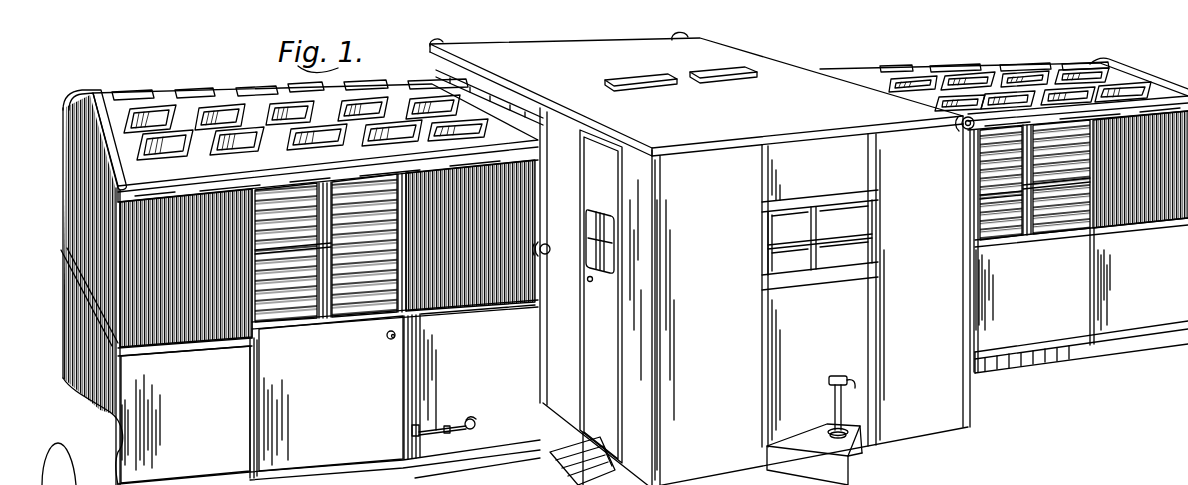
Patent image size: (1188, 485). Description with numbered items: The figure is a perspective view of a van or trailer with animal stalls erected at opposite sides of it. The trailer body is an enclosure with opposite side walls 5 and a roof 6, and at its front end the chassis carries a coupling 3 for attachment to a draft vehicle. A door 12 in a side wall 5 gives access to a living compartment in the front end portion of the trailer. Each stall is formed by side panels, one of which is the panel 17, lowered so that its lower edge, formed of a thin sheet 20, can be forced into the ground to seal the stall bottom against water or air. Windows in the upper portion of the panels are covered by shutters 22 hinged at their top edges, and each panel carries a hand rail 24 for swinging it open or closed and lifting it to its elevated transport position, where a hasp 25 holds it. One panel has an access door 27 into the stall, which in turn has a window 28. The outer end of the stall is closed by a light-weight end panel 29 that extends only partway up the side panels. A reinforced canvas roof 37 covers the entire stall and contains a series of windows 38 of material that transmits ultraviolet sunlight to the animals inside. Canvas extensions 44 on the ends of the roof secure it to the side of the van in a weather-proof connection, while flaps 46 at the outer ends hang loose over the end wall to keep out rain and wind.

The coupling 3 is at (849, 452).
The side wall 5 is at (574, 420).
The roof 6 is at (733, 54).
The door 12 is at (590, 364).
The panel 17 is at (1153, 323).
The thin sheet 20 is at (1076, 361).
The shutter 22 is at (207, 343).
The hand rail 24 is at (453, 421).
The hasp 25 is at (549, 254).
The access door 27 is at (278, 422).
The window 28 is at (305, 324).
The end panel 29 is at (76, 396).
The roof 37 is at (171, 102).
The window 38 is at (216, 137).
The canvas extension 44 is at (512, 110).
The flap 46 is at (95, 78).